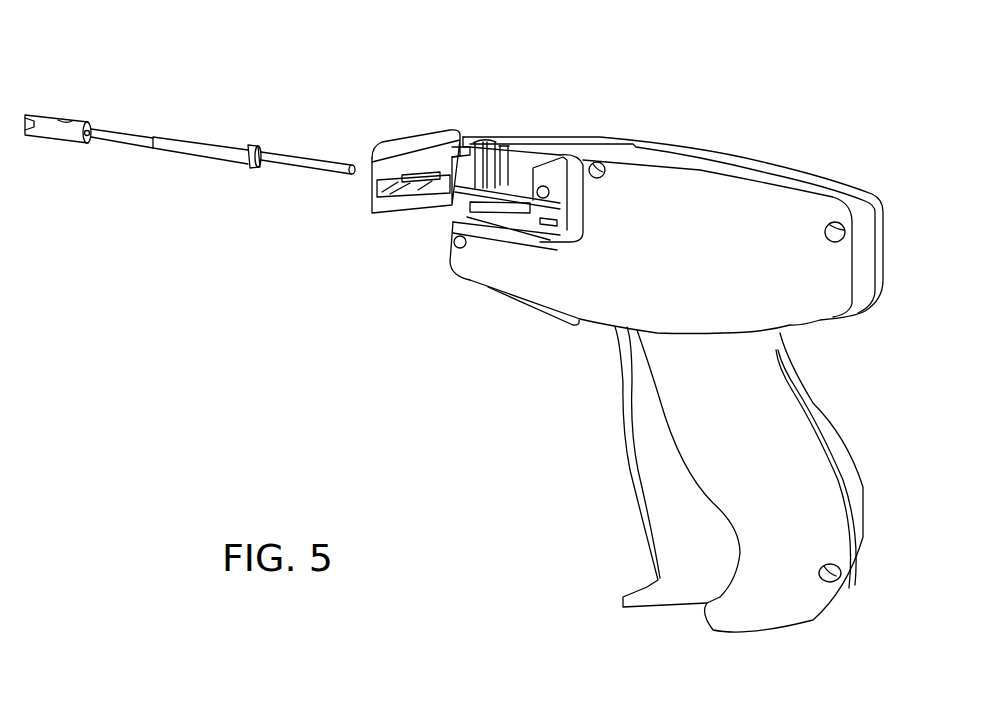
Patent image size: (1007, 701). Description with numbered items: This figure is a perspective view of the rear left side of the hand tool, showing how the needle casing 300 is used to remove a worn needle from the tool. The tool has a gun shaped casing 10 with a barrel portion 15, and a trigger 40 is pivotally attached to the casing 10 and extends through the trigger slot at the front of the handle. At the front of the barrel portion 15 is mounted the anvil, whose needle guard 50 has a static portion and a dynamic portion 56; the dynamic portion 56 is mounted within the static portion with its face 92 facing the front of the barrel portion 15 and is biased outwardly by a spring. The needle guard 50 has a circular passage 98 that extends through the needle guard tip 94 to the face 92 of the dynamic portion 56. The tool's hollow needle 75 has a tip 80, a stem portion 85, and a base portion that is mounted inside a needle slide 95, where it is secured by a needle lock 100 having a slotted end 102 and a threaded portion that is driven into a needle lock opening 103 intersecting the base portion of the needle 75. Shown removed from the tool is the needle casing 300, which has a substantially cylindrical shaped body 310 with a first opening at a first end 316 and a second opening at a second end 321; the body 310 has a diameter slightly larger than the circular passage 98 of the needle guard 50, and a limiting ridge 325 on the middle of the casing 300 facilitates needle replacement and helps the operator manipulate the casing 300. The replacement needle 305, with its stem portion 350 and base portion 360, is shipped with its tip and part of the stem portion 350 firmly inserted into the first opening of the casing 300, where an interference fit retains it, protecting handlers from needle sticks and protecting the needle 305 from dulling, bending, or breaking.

The replacement needle 305 is at (69, 96).
The needle casing 300 is at (233, 98).
The base portion 360 is at (60, 148).
The stem portion 350 is at (130, 134).
The first end 316 is at (170, 154).
The limiting ridge 325 is at (253, 170).
The cylindrical shaped body 310 is at (300, 152).
The second end 321 is at (317, 176).
The needle guard 50 is at (436, 115).
The needle guard tip 94 is at (378, 144).
The circular passage 98 is at (420, 188).
The barrel portion 15 is at (721, 119).
The casing 10 is at (837, 197).
The dynamic portion 56 is at (468, 138).
The hollow needle 75 is at (505, 160).
The needle lock opening 103 is at (543, 160).
The needle lock 100 is at (560, 157).
The needle slide 95 is at (562, 186).
The face 92 is at (450, 215).
The slotted end 102 is at (540, 226).
The tip 80 is at (475, 236).
The stem portion 85 is at (500, 250).
The trigger 40 is at (647, 548).